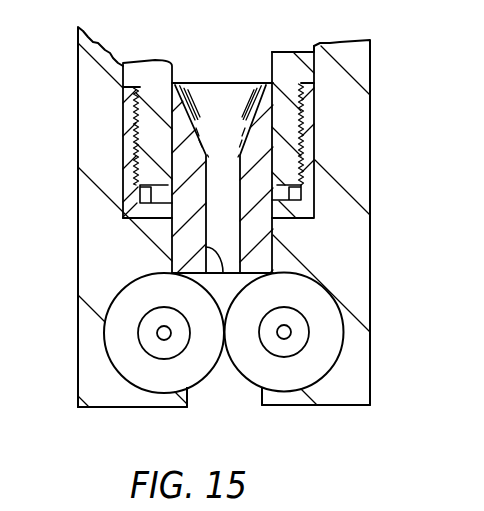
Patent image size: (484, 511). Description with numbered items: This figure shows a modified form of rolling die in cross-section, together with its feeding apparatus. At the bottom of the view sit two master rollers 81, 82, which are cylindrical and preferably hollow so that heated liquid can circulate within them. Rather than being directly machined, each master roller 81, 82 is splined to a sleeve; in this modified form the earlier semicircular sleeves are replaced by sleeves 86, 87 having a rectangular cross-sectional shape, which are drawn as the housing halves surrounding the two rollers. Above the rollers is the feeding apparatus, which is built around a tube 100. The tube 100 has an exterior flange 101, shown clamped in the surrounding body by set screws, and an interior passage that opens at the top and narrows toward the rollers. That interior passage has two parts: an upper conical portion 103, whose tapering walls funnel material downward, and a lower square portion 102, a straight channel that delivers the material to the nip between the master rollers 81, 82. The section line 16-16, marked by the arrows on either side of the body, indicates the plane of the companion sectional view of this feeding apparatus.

The section line 16- 16 is at (35, 243).
The master roller 81 is at (168, 290).
The master roller 82 is at (281, 314).
The sleeve 86 is at (138, 287).
The sleeve 87 is at (313, 292).
The tube 100 is at (240, 112).
The exterior flange 101 is at (285, 193).
The lower square portion 102 is at (203, 247).
The upper conical portion 103 is at (264, 89).